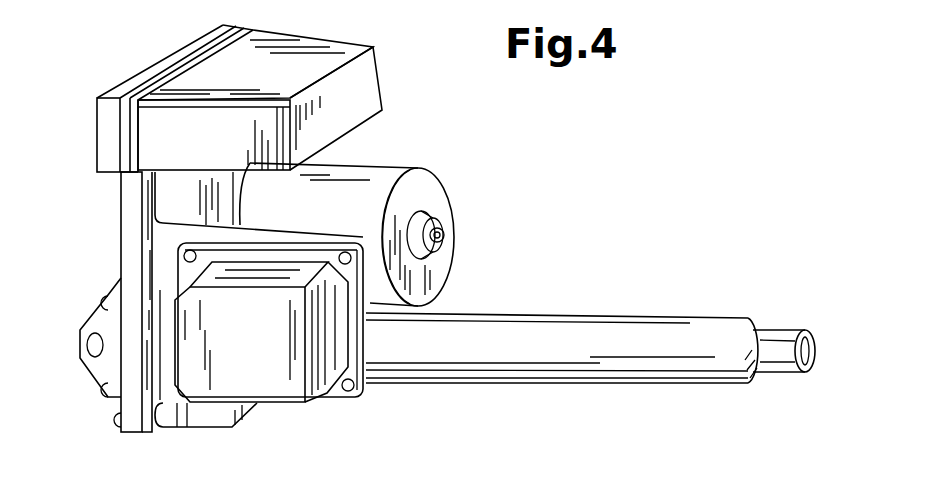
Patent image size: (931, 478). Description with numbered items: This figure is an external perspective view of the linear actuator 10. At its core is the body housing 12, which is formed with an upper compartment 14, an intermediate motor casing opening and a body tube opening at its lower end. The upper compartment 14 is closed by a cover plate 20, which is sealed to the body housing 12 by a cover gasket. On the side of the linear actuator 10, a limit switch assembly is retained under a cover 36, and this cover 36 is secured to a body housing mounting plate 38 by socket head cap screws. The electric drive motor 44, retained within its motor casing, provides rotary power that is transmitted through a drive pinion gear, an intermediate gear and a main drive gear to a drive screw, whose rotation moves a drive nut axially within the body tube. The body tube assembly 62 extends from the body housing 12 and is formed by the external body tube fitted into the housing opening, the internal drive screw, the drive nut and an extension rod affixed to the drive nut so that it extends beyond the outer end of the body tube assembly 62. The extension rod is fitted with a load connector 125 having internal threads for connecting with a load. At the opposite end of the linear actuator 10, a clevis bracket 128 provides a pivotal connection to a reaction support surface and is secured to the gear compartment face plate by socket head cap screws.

The linear actuator 10 is at (463, 159).
The body housing 12 is at (145, 208).
The upper compartment 14 is at (277, 78).
The cover plate 20 is at (97, 133).
The cover 36 is at (263, 356).
The body housing mounting plate 38 is at (178, 405).
The electric drive motor 44 is at (460, 219).
The body tube assembly 62 is at (653, 308).
The load connector 125 is at (795, 330).
The clevis bracket 128 is at (80, 371).